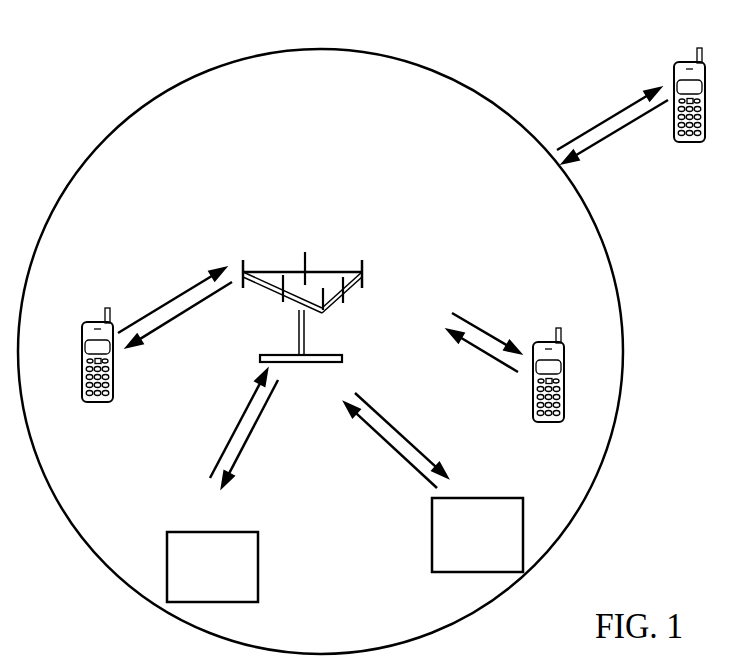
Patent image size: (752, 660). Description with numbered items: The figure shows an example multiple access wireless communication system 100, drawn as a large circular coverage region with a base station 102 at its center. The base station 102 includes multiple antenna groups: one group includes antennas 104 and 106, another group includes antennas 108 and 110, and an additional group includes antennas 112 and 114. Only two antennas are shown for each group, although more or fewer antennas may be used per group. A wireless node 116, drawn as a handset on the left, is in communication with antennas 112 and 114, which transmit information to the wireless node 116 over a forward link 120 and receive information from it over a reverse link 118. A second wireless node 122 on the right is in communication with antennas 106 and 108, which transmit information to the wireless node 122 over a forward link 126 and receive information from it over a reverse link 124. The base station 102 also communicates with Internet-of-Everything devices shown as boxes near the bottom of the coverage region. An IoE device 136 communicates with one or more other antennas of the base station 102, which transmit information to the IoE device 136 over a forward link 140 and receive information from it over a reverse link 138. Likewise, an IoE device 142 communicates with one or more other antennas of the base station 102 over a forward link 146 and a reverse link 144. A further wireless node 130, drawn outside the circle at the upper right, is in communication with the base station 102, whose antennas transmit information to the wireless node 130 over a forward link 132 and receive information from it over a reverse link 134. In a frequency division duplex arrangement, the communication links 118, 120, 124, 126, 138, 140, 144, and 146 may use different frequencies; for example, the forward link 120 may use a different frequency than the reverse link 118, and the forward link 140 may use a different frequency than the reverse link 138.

The multiple access wireless communication system 100 is at (336, 35).
The base station 102 is at (285, 362).
The antenna 104 is at (322, 315).
The antenna 106 is at (343, 302).
The antenna 108 is at (367, 282).
The antenna 110 is at (305, 254).
The antenna 112 is at (242, 262).
The antenna 114 is at (283, 302).
The wireless node 116 is at (82, 336).
The reverse link 118 is at (178, 297).
The forward link 120 is at (168, 325).
The wireless node 122 is at (565, 367).
The reverse link 124 is at (490, 357).
The forward link 126 is at (485, 332).
The wireless node 130 is at (674, 83).
The forward link 132 is at (617, 112).
The reverse link 134 is at (603, 140).
The IoE device 136 is at (208, 532).
The reverse link 138 is at (228, 442).
The forward link 140 is at (247, 455).
The IoE device 142 is at (472, 498).
The reverse link 144 is at (400, 458).
The forward link 146 is at (407, 435).